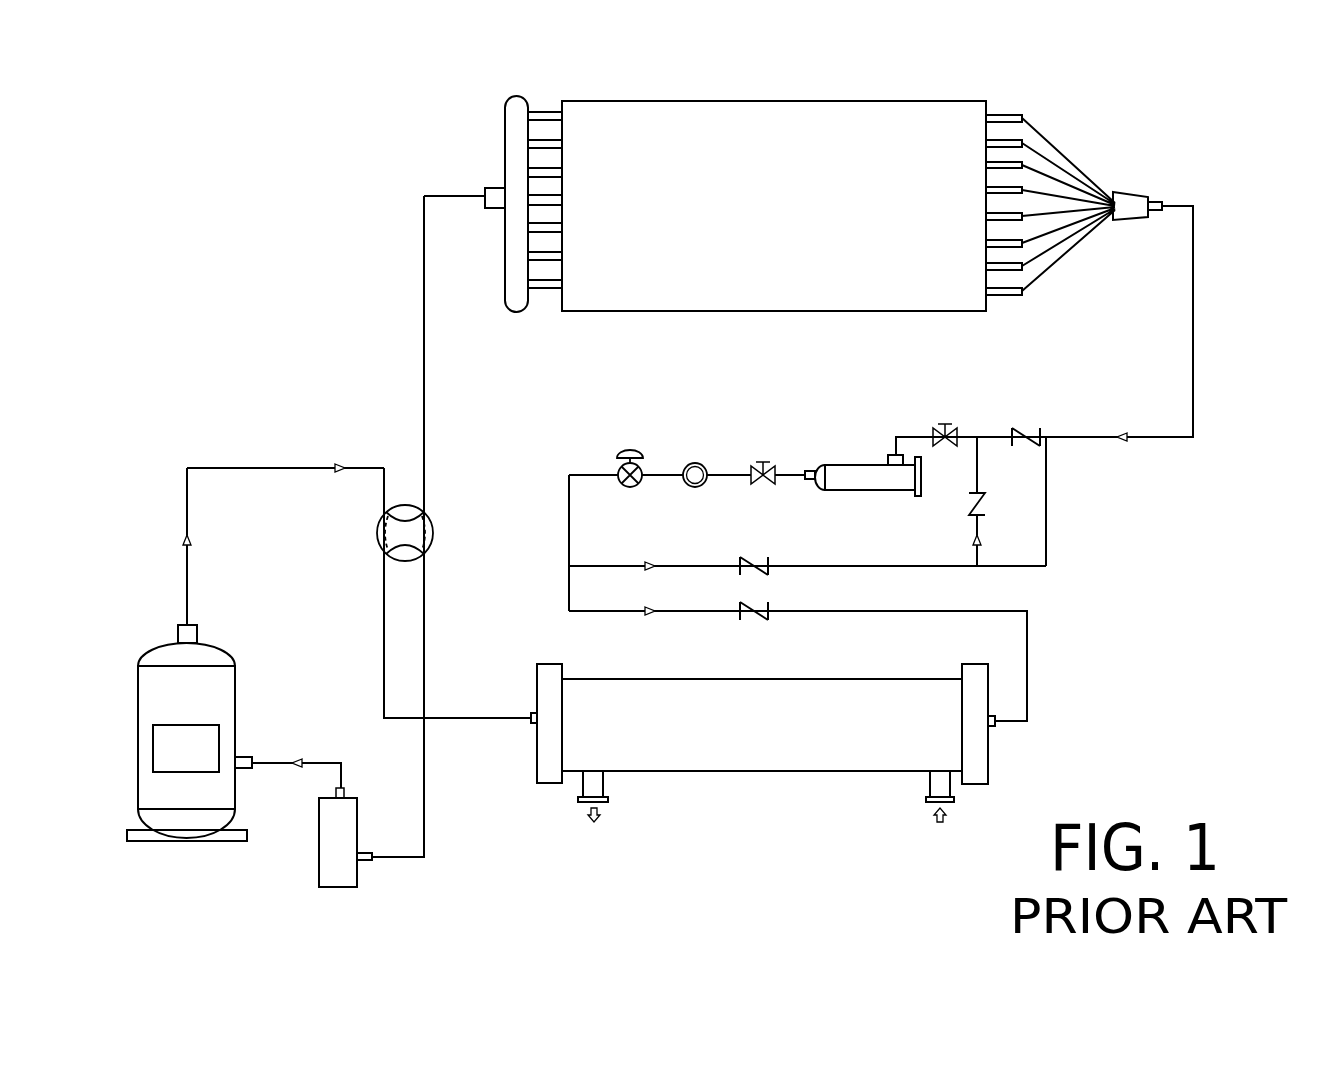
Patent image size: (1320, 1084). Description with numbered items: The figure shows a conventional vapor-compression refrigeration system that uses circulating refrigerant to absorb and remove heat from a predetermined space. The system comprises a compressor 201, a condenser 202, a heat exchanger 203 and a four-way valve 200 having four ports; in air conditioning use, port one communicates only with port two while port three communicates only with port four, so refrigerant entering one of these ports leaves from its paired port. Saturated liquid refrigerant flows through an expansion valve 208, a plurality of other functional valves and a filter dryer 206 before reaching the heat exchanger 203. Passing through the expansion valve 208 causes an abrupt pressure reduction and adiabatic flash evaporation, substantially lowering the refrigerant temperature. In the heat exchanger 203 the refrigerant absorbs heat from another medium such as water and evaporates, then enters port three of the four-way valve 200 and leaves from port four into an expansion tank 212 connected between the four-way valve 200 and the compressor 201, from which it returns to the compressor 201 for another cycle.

The four-way valve 200 is at (403, 503).
The compressor 201 is at (137, 781).
The condenser 202 is at (650, 100).
The heat exchanger 203 is at (722, 771).
The filter dryer 206 is at (860, 463).
The expansion valve 208 is at (620, 462).
The expansion tank 212 is at (320, 830).